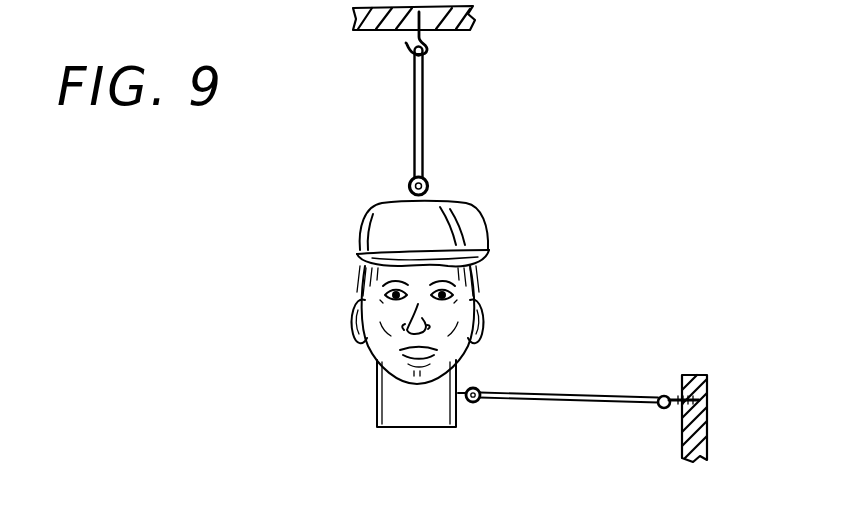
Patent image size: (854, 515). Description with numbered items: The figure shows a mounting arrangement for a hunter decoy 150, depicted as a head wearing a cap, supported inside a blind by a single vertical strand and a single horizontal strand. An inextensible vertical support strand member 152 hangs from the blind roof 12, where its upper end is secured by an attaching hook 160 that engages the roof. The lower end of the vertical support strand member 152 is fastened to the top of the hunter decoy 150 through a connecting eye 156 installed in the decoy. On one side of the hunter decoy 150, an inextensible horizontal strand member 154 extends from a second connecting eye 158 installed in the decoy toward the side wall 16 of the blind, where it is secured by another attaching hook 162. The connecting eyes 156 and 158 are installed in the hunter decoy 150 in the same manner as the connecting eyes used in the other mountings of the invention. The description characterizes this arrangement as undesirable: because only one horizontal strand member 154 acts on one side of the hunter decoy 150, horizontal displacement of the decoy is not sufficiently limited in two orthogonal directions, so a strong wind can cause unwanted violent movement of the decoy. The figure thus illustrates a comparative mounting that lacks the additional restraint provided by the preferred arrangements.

The blind roof 12 is at (477, 15).
The attaching hook 160 is at (430, 46).
The inextensible vertical support strand member 152 is at (424, 110).
The connecting eye 156 is at (431, 181).
The hunter decoy 150 is at (560, 179).
The connecting eye 158 is at (481, 390).
The inextensible horizontal strand member 154 is at (570, 394).
The attaching hook 162 is at (661, 393).
The side wall 16 is at (710, 380).